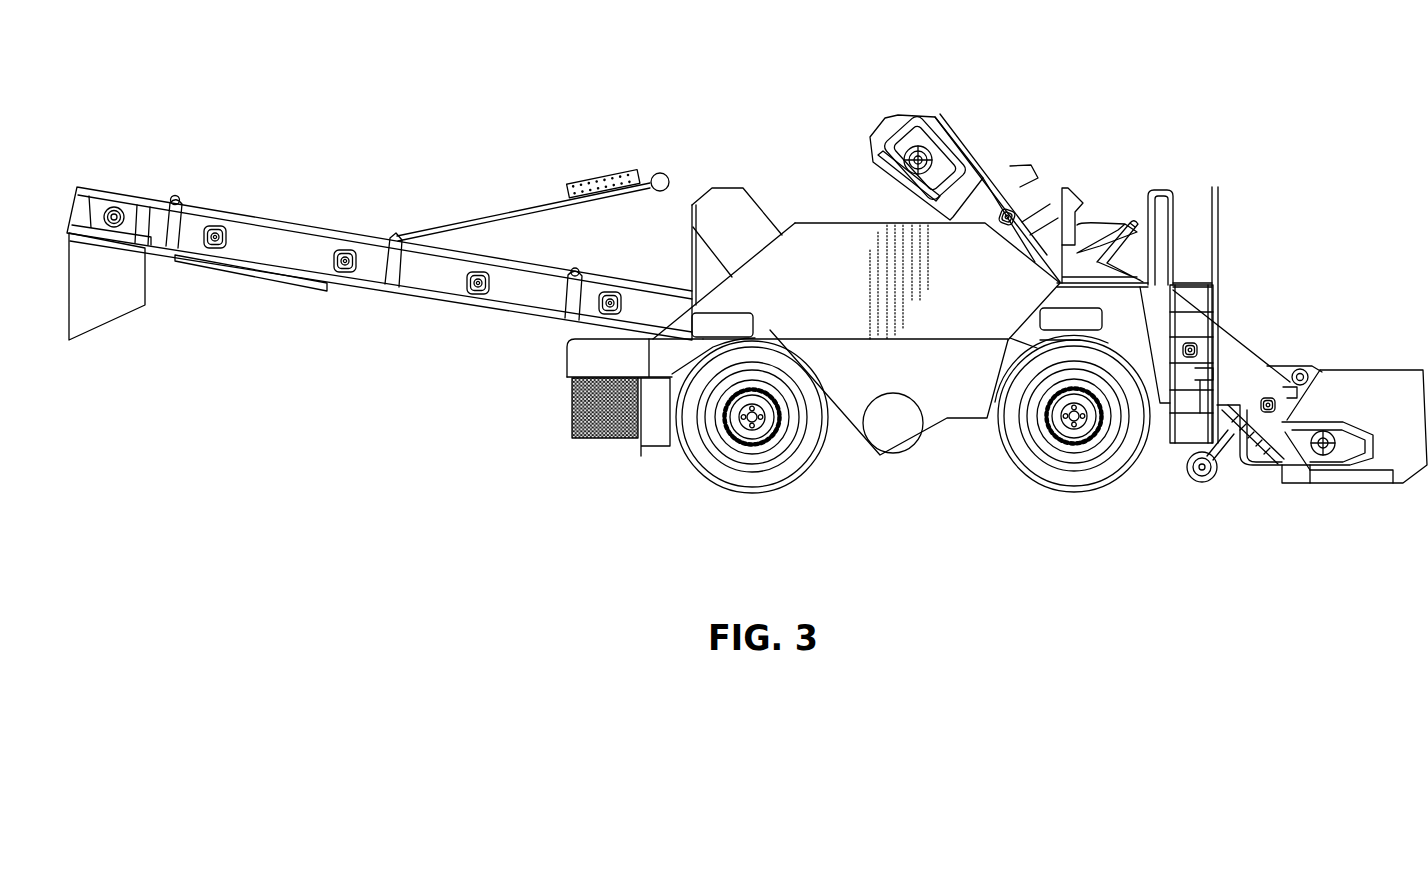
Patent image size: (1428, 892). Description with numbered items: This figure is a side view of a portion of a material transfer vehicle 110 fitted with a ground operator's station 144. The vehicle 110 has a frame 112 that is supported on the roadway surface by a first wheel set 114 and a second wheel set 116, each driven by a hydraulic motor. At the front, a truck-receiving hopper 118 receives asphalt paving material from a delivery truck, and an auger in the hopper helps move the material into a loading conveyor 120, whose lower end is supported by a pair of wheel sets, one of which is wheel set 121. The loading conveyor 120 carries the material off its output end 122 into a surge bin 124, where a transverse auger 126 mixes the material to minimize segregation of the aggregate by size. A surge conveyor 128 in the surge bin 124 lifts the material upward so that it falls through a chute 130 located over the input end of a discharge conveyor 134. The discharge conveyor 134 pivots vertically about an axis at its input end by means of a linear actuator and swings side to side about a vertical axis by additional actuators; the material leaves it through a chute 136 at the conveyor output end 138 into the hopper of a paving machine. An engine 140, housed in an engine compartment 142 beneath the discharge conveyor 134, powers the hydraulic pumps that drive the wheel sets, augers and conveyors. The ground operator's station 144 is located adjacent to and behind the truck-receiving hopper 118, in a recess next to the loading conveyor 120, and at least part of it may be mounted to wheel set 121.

The material transfer vehicle 110 is at (1183, 148).
The frame 112 is at (950, 421).
The first wheel set 114 is at (1058, 495).
The second wheel set 116 is at (742, 508).
The truck-receiving hopper 118 is at (1383, 353).
The loading conveyor 120 is at (990, 193).
The wheel set 121 is at (1187, 483).
The output end 122 is at (919, 108).
The surge bin 124 is at (847, 252).
The transverse auger 126 is at (887, 427).
The surge conveyor 128 is at (728, 223).
The chute 130 is at (688, 242).
The discharge conveyor 134 is at (267, 252).
The chute 136 is at (151, 284).
The conveyor output end 138 is at (118, 185).
The engine 140 is at (603, 436).
The engine compartment 142 is at (563, 392).
The ground operator's station 144 is at (1257, 477).